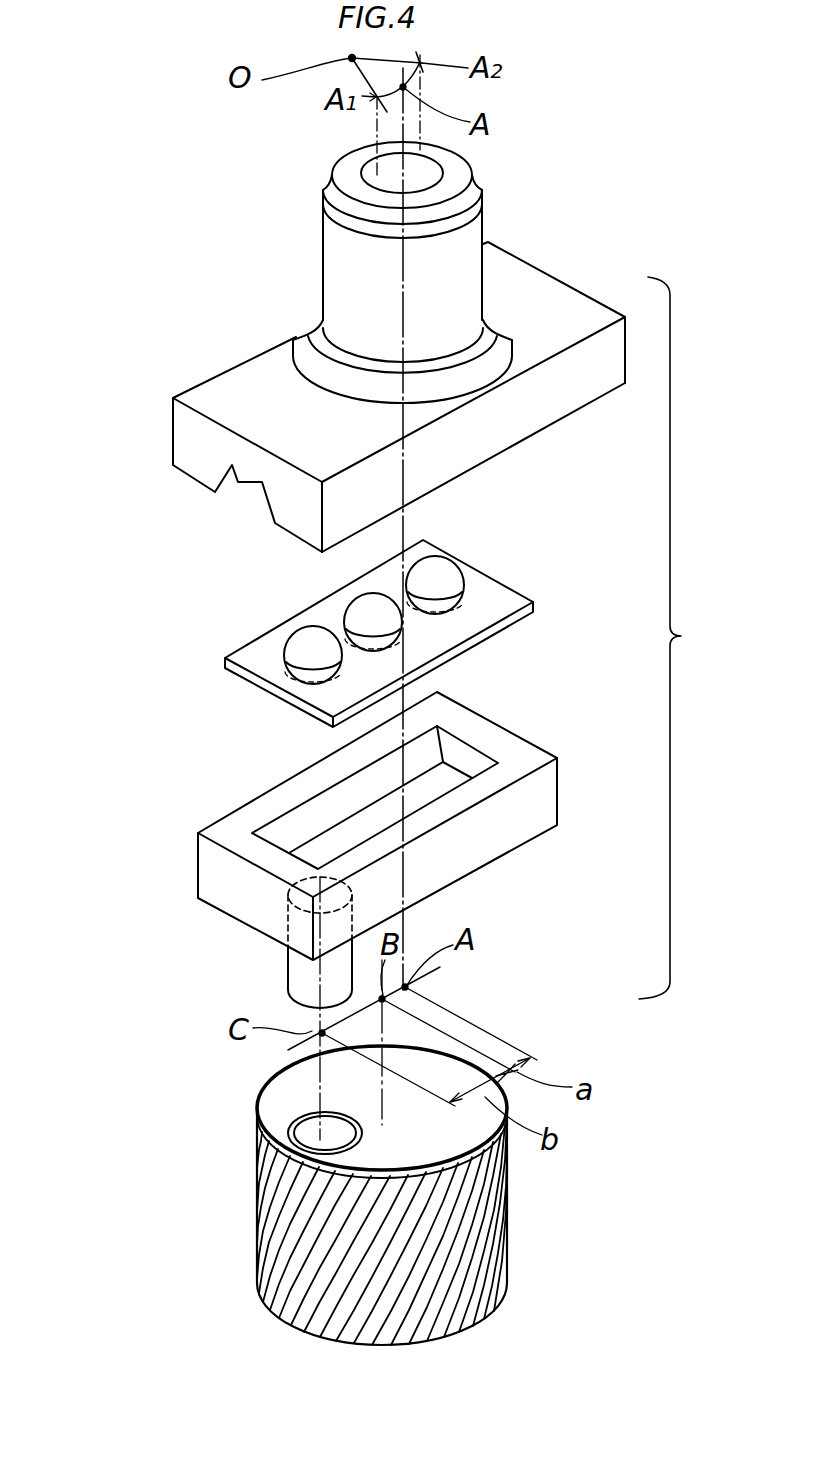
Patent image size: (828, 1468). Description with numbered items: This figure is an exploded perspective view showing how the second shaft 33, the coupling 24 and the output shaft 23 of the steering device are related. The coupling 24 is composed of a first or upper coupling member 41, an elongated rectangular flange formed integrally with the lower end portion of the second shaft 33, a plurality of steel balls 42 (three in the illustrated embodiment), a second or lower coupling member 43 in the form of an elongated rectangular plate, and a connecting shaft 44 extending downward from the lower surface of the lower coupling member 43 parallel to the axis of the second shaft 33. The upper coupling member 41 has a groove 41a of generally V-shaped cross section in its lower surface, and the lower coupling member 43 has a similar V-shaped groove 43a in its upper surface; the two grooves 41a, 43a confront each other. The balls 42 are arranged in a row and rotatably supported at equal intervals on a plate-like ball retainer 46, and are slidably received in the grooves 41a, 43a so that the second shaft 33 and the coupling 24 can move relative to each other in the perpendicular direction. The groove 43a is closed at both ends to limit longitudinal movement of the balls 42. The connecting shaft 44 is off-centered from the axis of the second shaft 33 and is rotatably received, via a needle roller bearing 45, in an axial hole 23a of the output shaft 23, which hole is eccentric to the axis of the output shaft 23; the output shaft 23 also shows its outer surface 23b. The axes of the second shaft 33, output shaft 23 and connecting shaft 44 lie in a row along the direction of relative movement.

The second shaft 33 is at (333, 277).
The first (upper) coupling member 41 is at (195, 445).
The groove 41a is at (233, 497).
The steel balls 42 is at (307, 640).
The plate-like ball retainer 46 is at (257, 668).
The second (lower) coupling member 43 is at (213, 866).
The groove 43a is at (296, 828).
The connecting shaft 44 is at (290, 983).
The needle roller bearing 45 is at (258, 1130).
The output shaft 23 is at (256, 1317).
The axial hole 23a is at (300, 1140).
The helical grooves 23b is at (283, 1242).
The coupling 24 is at (688, 638).